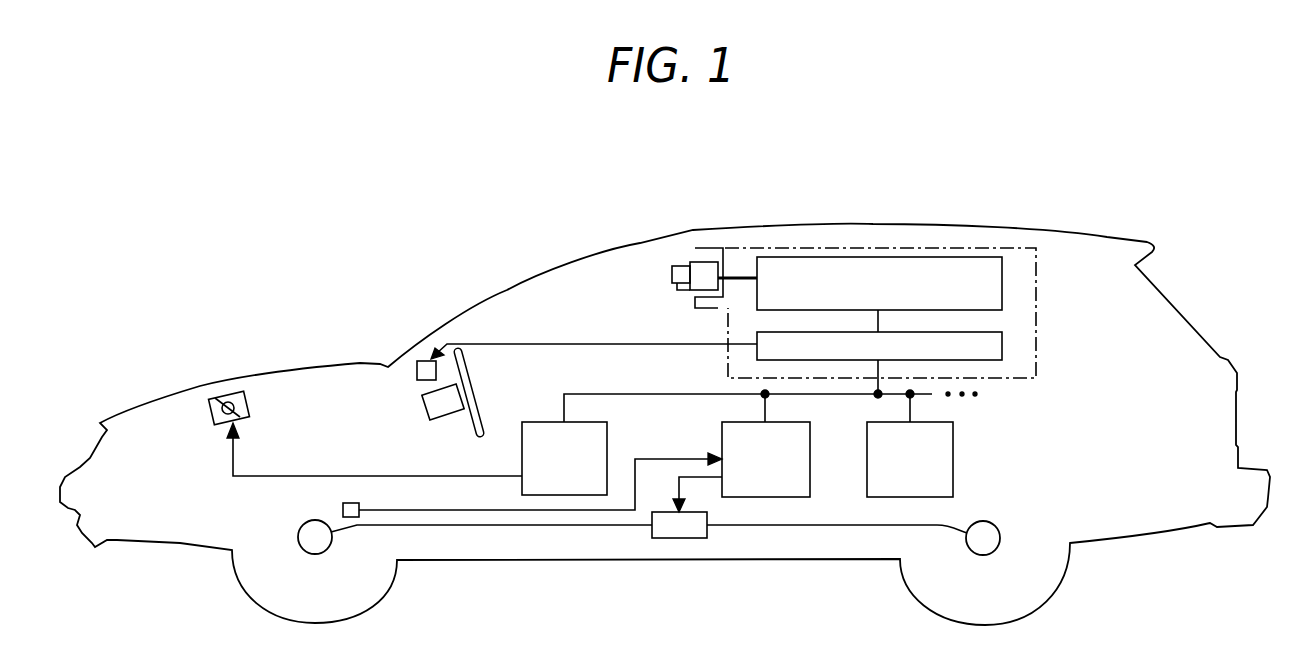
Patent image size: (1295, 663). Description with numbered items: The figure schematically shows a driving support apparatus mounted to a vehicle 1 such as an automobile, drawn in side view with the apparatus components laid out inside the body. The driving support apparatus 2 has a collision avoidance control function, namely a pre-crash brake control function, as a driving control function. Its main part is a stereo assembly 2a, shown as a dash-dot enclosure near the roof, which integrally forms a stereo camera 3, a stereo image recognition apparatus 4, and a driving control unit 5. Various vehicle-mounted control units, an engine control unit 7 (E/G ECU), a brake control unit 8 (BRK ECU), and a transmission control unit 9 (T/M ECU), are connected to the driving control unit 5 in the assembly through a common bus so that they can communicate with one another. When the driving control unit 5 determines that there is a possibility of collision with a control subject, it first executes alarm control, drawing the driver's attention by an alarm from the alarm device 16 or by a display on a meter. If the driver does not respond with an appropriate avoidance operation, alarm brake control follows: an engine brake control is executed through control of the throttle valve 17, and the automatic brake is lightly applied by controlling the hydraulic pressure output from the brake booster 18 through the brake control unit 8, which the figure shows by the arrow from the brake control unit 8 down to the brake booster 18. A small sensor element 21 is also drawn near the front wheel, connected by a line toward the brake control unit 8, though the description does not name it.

The vehicle 1 is at (1042, 174).
The driving support apparatus 2 is at (911, 271).
The stereo assembly 2a is at (1036, 310).
The stereo camera 3 is at (726, 244).
The stereo image recognition apparatus 4 is at (1002, 273).
The driving control unit 5 is at (1002, 343).
The engine control unit 7 is at (608, 443).
The brake control unit 8 is at (811, 444).
The transmission control unit 9 is at (954, 442).
The alarm device 16 is at (417, 371).
The throttle valve 17 is at (246, 405).
The brake booster 18 is at (707, 532).
The vehicle speed sensor 21 is at (343, 510).